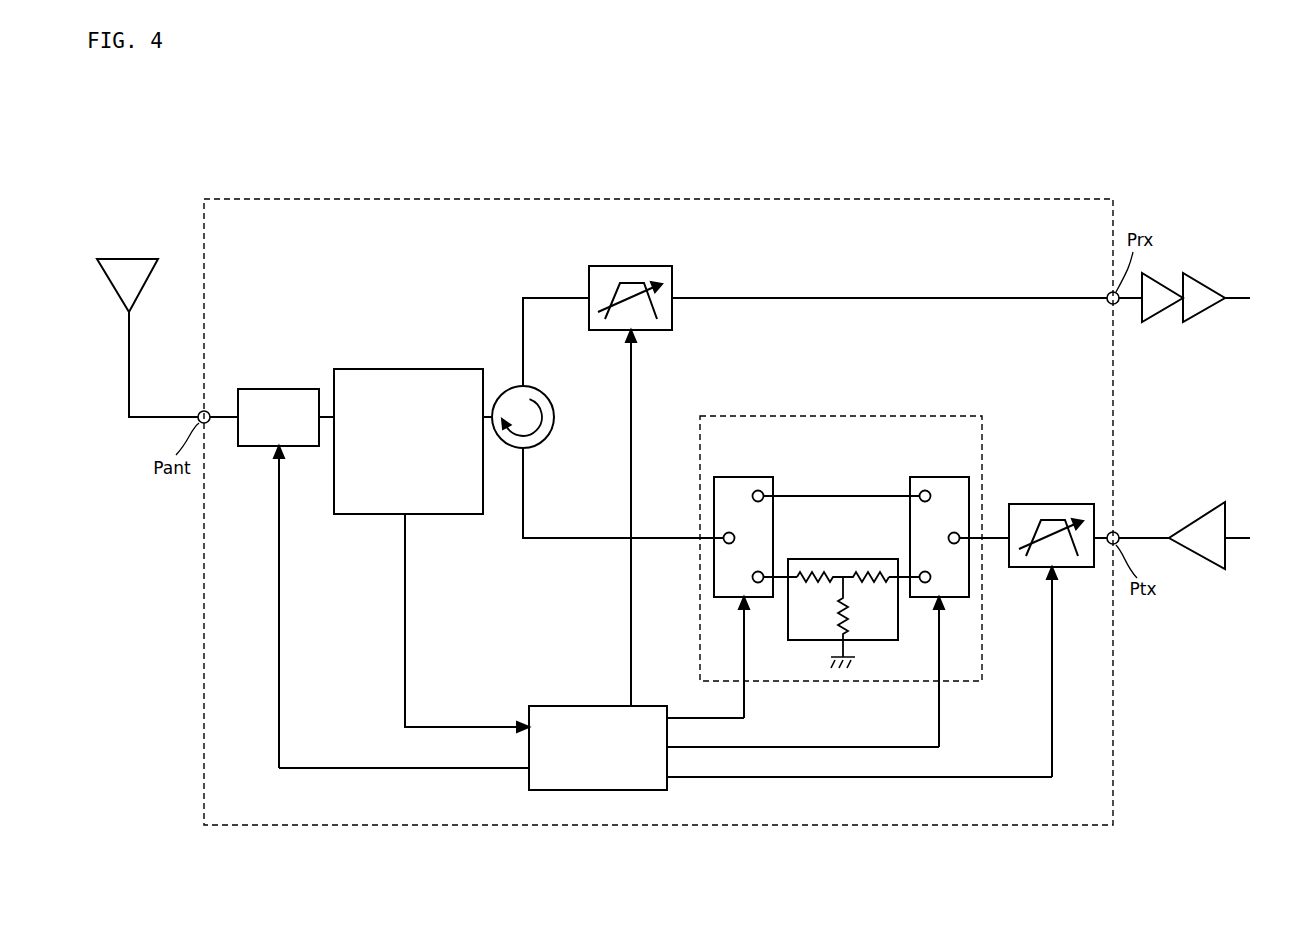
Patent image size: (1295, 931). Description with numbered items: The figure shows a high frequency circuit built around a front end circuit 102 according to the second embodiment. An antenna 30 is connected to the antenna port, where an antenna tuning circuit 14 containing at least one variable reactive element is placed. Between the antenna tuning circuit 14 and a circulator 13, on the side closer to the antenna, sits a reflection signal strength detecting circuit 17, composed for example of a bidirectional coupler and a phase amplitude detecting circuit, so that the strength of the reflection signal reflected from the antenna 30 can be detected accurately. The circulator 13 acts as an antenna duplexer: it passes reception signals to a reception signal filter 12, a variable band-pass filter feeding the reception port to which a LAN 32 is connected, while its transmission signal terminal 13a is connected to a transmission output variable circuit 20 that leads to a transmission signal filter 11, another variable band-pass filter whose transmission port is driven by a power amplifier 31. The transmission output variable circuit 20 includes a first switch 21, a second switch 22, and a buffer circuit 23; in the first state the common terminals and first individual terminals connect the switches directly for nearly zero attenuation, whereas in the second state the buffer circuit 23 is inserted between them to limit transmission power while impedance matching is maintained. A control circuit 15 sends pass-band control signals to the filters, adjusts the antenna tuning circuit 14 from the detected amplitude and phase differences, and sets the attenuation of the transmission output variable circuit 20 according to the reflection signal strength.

The front end circuit 102 is at (835, 198).
The antenna 30 is at (130, 258).
The antenna tuning circuit 14 is at (281, 388).
The reflection signal strength detecting circuit 17 is at (408, 368).
The circulator 13 is at (556, 418).
The transmission signal terminal 13a is at (530, 452).
The reception signal filter 12 is at (633, 265).
The transmission output variable circuit 20 is at (843, 415).
The second high frequency switch 22 is at (745, 476).
The first high frequency switch 21 is at (938, 476).
The buffer circuit 23 is at (843, 558).
The transmission signal filter 11 is at (1052, 503).
The control circuit 15 is at (591, 705).
The power amplifier 31 is at (1190, 516).
The LAN 32 is at (1190, 258).